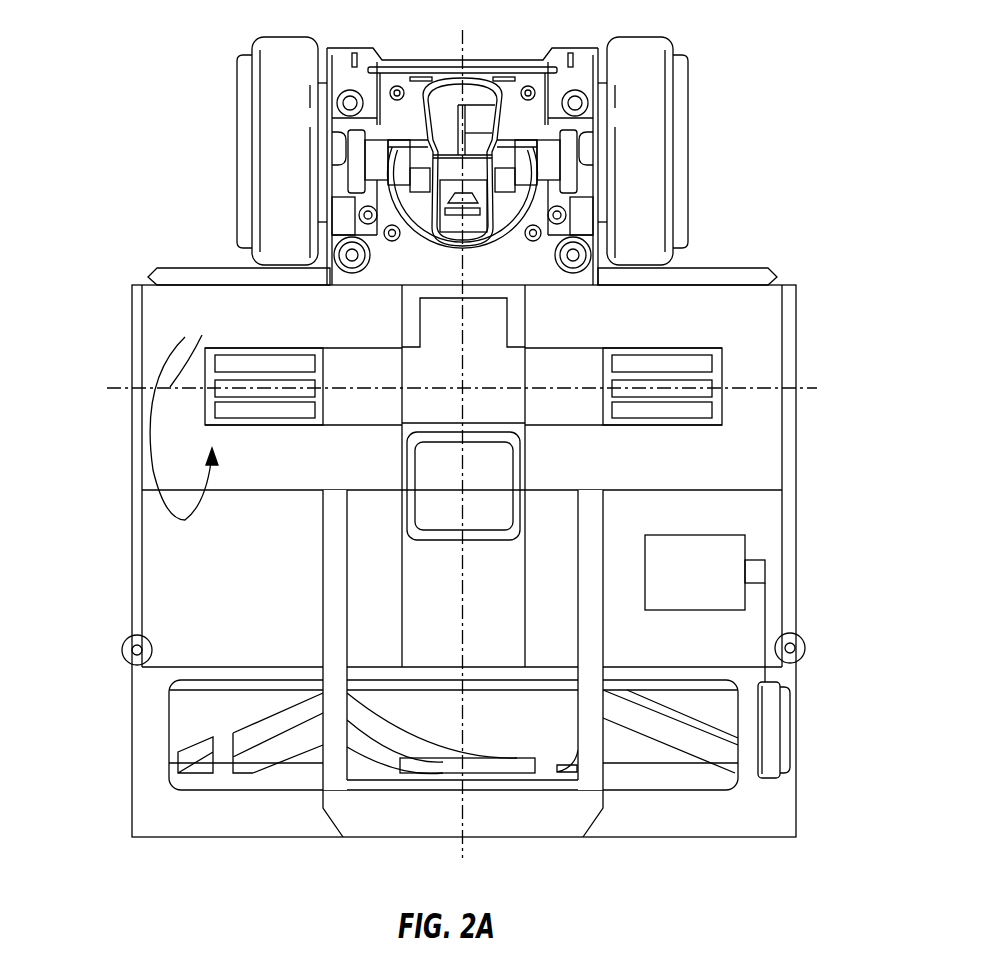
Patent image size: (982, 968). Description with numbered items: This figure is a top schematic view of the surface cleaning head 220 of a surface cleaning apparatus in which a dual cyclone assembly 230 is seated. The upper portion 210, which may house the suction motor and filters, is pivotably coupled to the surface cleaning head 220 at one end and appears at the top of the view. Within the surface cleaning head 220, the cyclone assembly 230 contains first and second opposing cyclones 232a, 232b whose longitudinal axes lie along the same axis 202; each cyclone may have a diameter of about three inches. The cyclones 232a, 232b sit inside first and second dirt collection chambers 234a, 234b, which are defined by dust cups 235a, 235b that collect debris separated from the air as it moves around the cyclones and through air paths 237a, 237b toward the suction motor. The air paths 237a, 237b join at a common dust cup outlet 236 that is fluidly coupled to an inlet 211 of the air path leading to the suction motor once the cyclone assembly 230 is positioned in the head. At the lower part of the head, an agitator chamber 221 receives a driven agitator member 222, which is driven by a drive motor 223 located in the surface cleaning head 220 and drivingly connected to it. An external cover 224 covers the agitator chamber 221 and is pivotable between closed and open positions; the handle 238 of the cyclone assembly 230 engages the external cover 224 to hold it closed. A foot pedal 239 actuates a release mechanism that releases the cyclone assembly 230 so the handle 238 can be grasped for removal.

The axis 202 is at (185, 411).
The upper portion 210 is at (482, 82).
The inlet 211 is at (448, 325).
The surface cleaning head 220 is at (141, 218).
The agitator chamber 221 is at (228, 725).
The driven agitator member 222 is at (723, 728).
The drive motor 223 is at (737, 545).
The external cover 224 is at (710, 785).
The cyclone assembly 230 is at (104, 358).
The first cyclone 232a is at (305, 427).
The second cyclone 232b is at (655, 427).
The first dirt collection chamber 234a is at (165, 322).
The second dirt collection chamber 234b is at (728, 313).
The first dust cup 235a is at (140, 447).
The second dust cup 235b is at (768, 445).
The common dust cup outlet 236 is at (478, 400).
The first air path 237a is at (368, 365).
The second air path 237b is at (560, 365).
The handle 238 is at (600, 737).
The foot pedal 239 is at (502, 460).